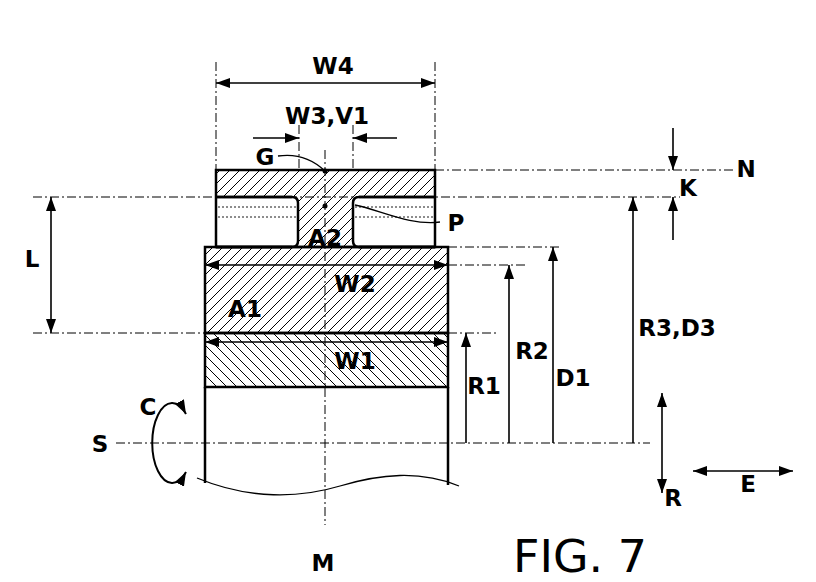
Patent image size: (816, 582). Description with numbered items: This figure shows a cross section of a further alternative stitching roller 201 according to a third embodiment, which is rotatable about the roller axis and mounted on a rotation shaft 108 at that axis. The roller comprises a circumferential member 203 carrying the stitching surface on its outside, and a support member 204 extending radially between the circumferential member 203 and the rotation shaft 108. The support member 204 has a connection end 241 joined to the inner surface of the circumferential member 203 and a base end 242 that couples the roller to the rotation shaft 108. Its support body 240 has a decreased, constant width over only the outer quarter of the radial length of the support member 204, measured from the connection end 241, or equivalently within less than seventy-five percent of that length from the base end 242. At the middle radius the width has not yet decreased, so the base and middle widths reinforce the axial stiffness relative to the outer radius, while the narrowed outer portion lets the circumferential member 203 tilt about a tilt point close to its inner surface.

The further alternative stitching roller 201 is at (136, 100).
The circumferential member 203 is at (294, 185).
The connection end 241 is at (296, 198).
The support member 204 is at (290, 230).
The base end 242 is at (282, 247).
The support body 240 is at (282, 296).
The rotation shaft 108 is at (210, 372).